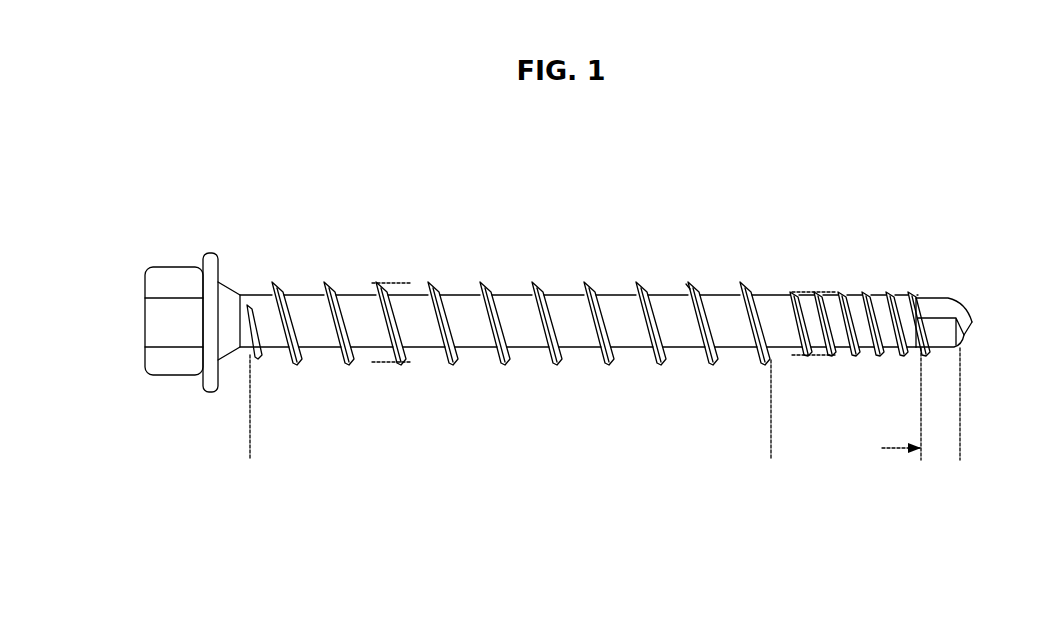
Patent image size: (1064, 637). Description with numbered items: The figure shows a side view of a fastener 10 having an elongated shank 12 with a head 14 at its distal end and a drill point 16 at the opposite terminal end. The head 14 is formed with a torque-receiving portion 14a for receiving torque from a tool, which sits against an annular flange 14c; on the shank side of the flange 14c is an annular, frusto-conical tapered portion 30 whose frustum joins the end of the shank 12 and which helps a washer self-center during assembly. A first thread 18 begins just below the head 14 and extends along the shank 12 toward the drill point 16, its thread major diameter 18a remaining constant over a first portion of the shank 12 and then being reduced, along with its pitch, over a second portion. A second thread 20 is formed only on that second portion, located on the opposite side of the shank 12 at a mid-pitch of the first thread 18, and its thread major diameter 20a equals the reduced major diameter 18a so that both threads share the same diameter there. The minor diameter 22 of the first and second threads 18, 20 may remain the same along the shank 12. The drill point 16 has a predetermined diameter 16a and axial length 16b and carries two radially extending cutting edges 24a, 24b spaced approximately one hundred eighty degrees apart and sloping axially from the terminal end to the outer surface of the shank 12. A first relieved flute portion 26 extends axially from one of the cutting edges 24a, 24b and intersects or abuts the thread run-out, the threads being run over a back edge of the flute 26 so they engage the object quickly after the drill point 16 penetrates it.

The fastener 10 is at (483, 194).
The shank 12 is at (637, 338).
The head 14 is at (175, 242).
The torque-receiving portion 14a is at (168, 358).
The annular flange 14c is at (210, 390).
The drill point 16 is at (915, 209).
The diameter of the drill point 16a is at (950, 297).
The axial length of the drill point 16b is at (961, 448).
The first thread 18 is at (360, 362).
The thread major diameter of the first thread 18a is at (390, 400).
The second thread 20 is at (790, 312).
The thread major diameter of the second thread 20a is at (812, 398).
The minor diameter 22 is at (682, 287).
The first cutting edge 24a is at (963, 314).
The second cutting edge 24b is at (949, 348).
The first relieved flute portion 26 is at (932, 306).
The tapered portion 30 is at (228, 292).